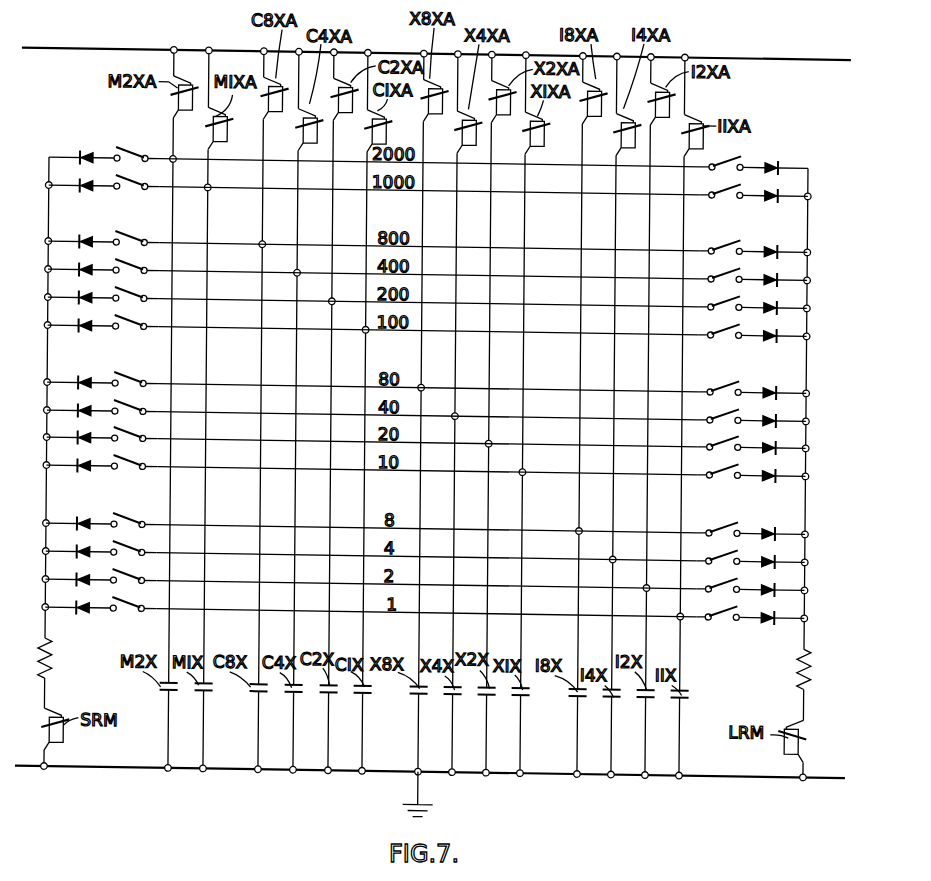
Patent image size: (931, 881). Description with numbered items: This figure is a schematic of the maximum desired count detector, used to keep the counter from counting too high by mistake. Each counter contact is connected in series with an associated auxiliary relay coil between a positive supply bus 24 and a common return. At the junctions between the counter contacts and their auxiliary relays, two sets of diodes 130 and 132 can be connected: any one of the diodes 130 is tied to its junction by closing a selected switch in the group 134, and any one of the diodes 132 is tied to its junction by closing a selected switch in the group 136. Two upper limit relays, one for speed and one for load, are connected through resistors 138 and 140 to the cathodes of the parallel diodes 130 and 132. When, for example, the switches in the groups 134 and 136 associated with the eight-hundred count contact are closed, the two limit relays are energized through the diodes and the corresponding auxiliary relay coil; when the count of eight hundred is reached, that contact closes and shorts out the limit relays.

The +24 volt supply bus 24 is at (117, 48).
The diodes 130 is at (771, 381).
The diodes 132 is at (88, 333).
The switches 134 is at (722, 614).
The switches 136 is at (127, 613).
The resistor 138 is at (801, 672).
The resistor 140 is at (56, 672).